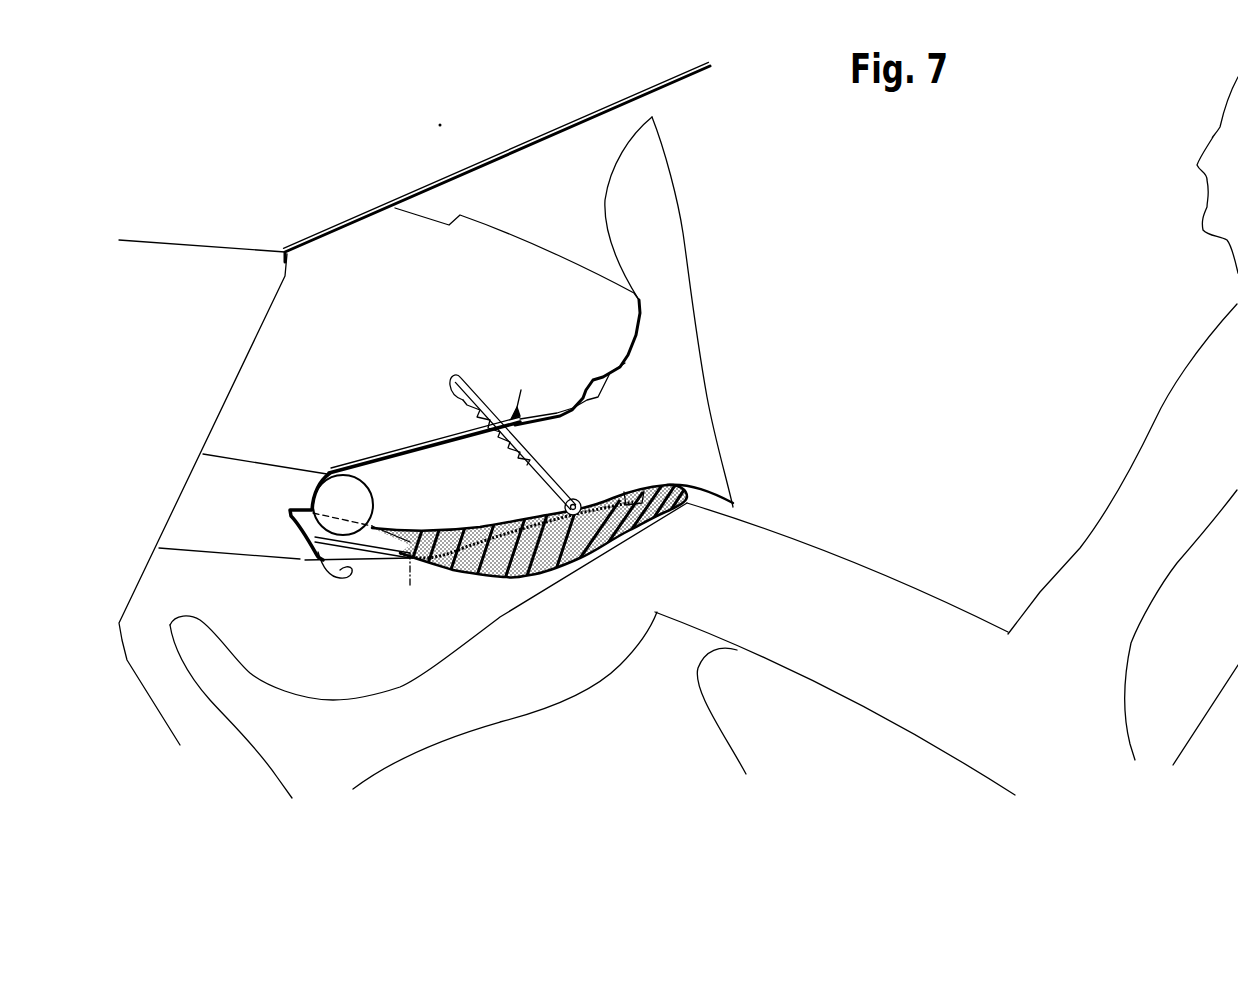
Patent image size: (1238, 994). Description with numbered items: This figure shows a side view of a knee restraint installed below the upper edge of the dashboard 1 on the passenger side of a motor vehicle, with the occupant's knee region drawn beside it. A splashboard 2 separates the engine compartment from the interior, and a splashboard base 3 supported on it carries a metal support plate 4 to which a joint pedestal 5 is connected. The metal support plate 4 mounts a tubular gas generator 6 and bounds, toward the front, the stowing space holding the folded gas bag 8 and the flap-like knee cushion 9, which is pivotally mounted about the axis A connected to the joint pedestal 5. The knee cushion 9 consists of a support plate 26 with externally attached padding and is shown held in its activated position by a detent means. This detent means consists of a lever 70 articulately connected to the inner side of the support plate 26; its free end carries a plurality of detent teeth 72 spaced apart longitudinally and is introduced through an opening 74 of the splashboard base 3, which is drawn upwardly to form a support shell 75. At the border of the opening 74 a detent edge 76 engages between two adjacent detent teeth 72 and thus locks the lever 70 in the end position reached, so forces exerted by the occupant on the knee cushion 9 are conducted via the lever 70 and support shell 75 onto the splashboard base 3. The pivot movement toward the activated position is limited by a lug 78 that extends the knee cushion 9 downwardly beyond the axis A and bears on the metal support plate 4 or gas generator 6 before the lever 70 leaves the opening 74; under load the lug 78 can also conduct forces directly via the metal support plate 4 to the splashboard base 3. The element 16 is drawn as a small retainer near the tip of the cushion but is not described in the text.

The upper edge of the dashboard 1 is at (688, 300).
The splashboard 2 is at (228, 390).
The splashboard base 3 is at (220, 500).
The metal support plate 4 is at (312, 495).
The joint pedestal 5 is at (338, 582).
The tubular gas generator 6 is at (348, 483).
The folded gas bag 8 is at (607, 206).
The knee cushion 9 is at (498, 570).
The retainer 16 is at (626, 494).
The support plate 26 is at (452, 570).
The lever 70 is at (554, 479).
The detent teeth 72 is at (514, 455).
The opening 74 is at (524, 392).
The support shell 75 is at (448, 437).
The detent edge 76 is at (497, 438).
The lug 78 is at (370, 556).
The axis A is at (418, 578).